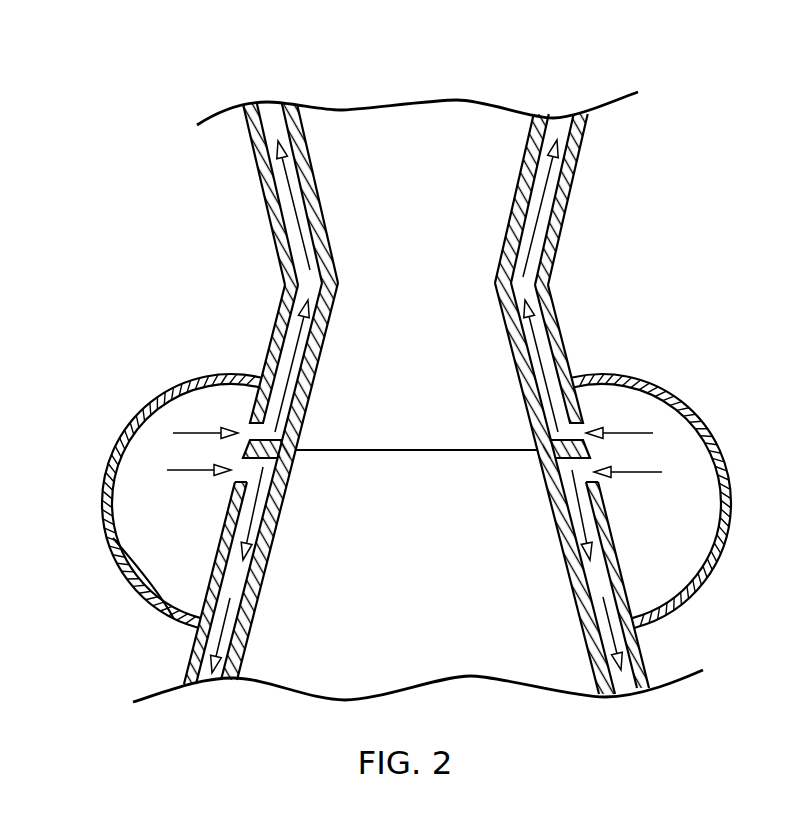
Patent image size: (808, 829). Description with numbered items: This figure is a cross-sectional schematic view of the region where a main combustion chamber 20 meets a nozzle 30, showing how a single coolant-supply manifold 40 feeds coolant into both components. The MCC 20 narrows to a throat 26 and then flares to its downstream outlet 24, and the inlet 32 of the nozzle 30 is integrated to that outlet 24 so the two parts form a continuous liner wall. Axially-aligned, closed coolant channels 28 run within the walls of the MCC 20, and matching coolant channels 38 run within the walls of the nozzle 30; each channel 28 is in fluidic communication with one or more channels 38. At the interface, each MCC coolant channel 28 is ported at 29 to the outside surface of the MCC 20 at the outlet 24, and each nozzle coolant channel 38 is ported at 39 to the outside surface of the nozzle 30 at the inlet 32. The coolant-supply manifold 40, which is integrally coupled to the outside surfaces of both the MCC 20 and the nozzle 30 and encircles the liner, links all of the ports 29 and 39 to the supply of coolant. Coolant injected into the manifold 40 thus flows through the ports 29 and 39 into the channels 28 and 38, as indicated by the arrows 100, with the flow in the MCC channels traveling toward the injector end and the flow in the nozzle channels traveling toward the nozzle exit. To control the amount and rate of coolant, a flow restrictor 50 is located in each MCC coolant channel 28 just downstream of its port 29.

The main combustion chamber 20 is at (584, 199).
The outlet 24 is at (417, 461).
The throat 26 is at (547, 288).
The coolant channel 28 is at (273, 130).
The port 29 is at (257, 432).
The nozzle 30 is at (665, 644).
The inlet 32 is at (357, 452).
The coolant channel 38 is at (208, 657).
The port 39 is at (243, 475).
The coolant-supply manifold 40 is at (165, 393).
The flow restrictor 50 is at (543, 405).
The arrows 100 is at (542, 405).